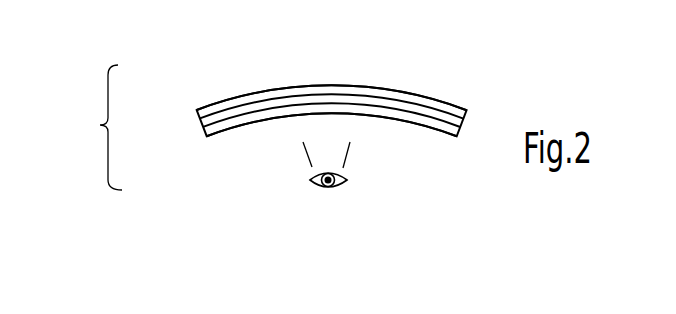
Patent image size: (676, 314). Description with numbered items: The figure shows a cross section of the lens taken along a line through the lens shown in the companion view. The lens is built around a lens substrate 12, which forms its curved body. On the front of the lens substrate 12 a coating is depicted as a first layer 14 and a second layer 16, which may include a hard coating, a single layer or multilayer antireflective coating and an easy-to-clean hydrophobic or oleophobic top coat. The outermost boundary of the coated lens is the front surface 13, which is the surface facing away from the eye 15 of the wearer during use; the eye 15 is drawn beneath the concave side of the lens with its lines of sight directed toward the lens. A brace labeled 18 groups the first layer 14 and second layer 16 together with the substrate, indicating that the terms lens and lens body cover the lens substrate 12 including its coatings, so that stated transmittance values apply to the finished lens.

The lens substrate 12 is at (432, 123).
The front surface 13 is at (425, 93).
The first layer 14 is at (203, 125).
The eye 15 is at (346, 170).
The second layer 16 is at (201, 110).
The laminate stack 18 is at (97, 127).